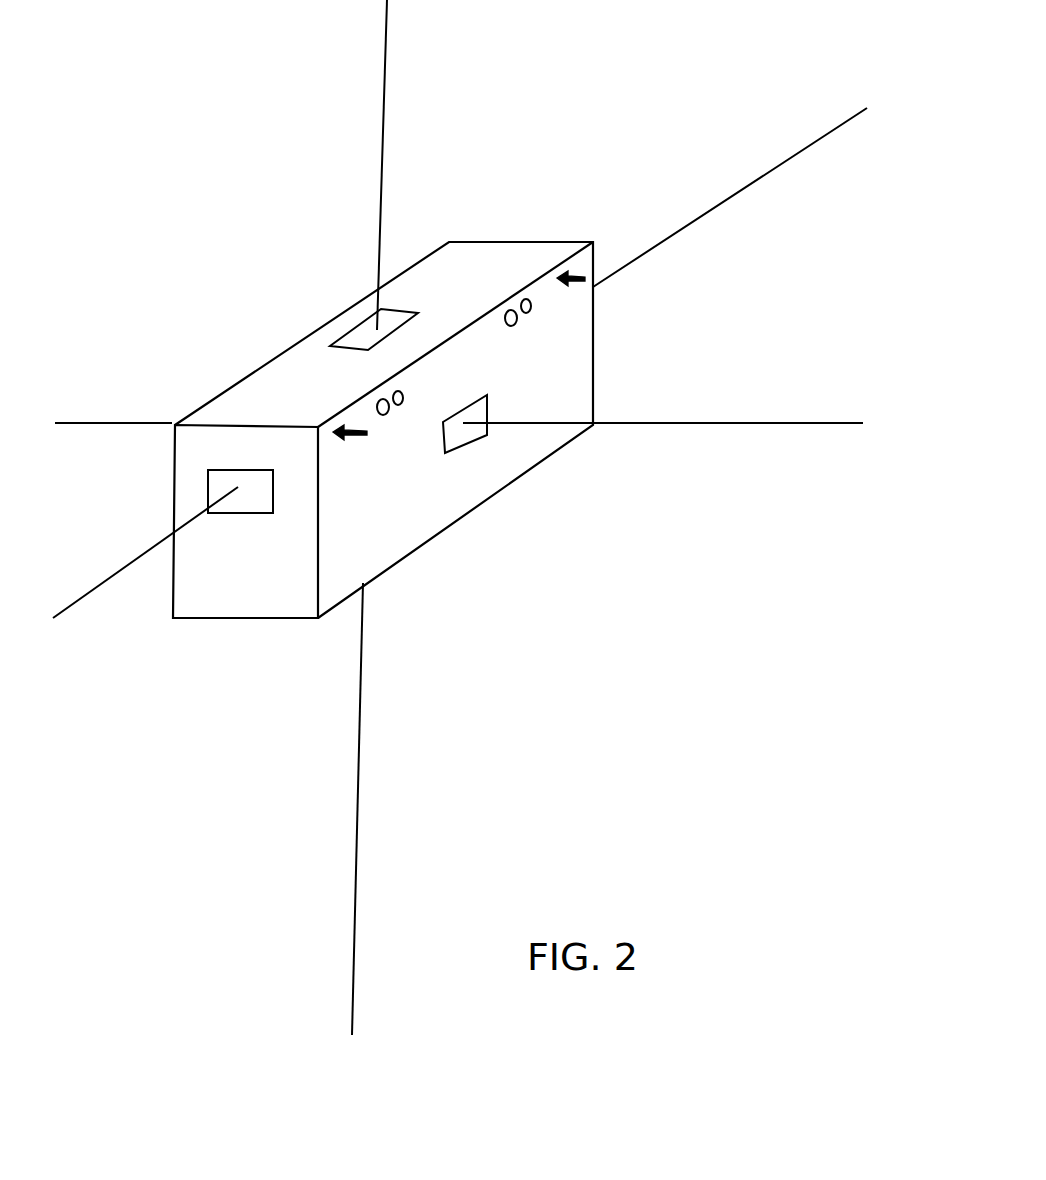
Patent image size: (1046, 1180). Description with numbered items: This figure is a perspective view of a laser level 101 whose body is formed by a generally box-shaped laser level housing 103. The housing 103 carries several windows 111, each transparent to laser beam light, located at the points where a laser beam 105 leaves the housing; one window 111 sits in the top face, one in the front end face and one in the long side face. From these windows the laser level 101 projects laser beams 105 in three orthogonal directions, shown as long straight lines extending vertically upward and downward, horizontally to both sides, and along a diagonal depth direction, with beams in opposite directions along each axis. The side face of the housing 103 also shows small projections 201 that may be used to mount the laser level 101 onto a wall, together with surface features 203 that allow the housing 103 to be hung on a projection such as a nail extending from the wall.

The laser level 101 is at (240, 240).
The laser level housing 103 is at (502, 237).
The laser beam 105 is at (402, 63).
The window 111 is at (407, 310).
The projections 201 is at (578, 268).
The surface features 203 is at (533, 318).